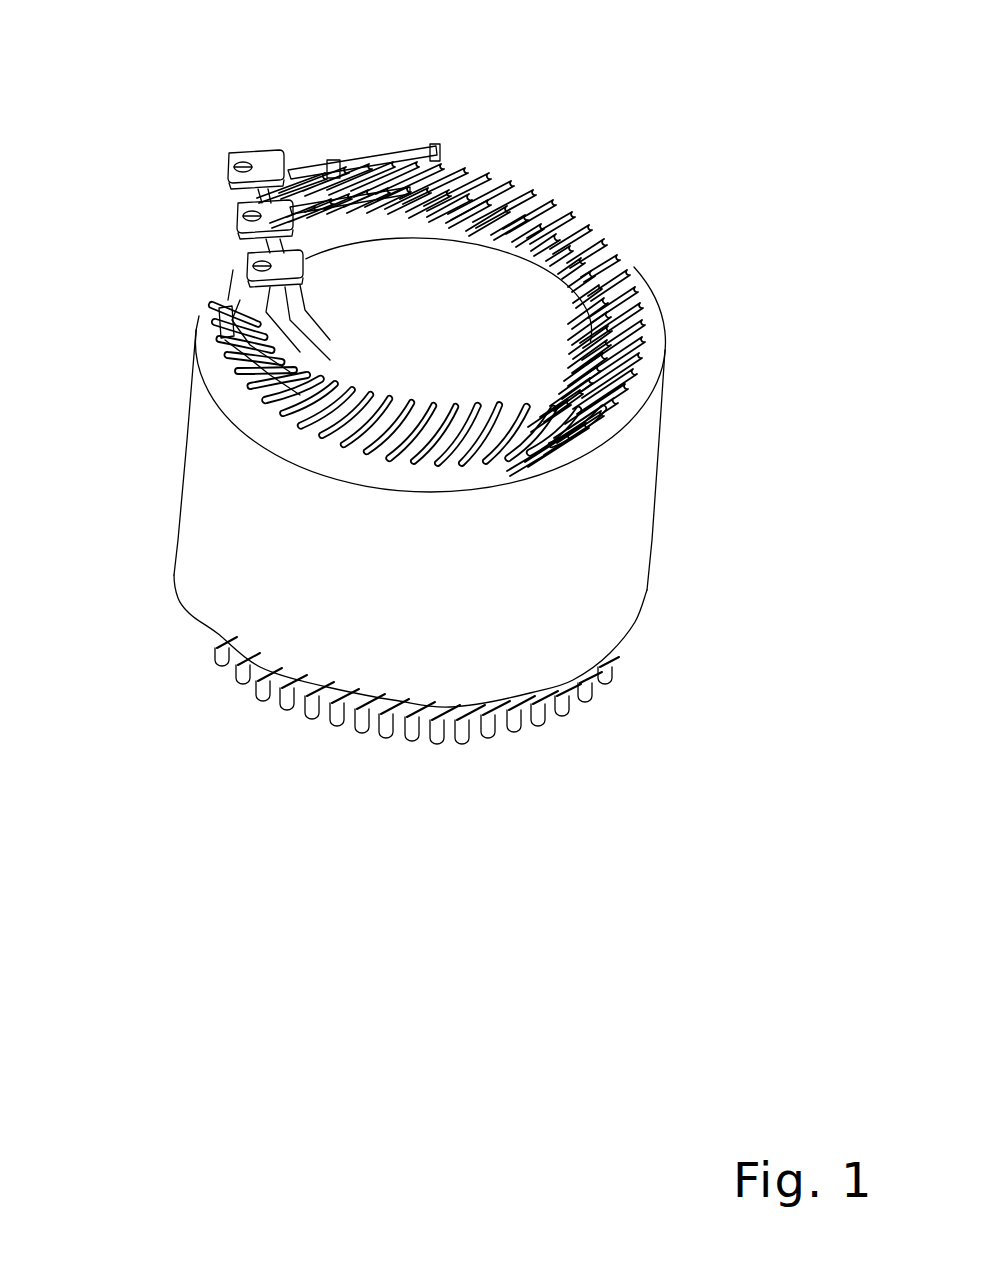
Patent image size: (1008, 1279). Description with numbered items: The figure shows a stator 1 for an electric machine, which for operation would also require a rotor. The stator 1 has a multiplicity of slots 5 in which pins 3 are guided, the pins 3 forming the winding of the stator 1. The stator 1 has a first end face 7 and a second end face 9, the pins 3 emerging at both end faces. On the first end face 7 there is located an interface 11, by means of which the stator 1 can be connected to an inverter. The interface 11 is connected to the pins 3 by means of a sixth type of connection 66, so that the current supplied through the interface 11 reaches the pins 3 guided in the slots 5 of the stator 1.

The stator 1 is at (492, 75).
The pins 3 is at (567, 198).
The slots 5 is at (352, 246).
The first end face 7 is at (638, 373).
The second end face 9 is at (617, 652).
The interface 11 is at (213, 163).
The sixth type of connection 66 is at (397, 160).